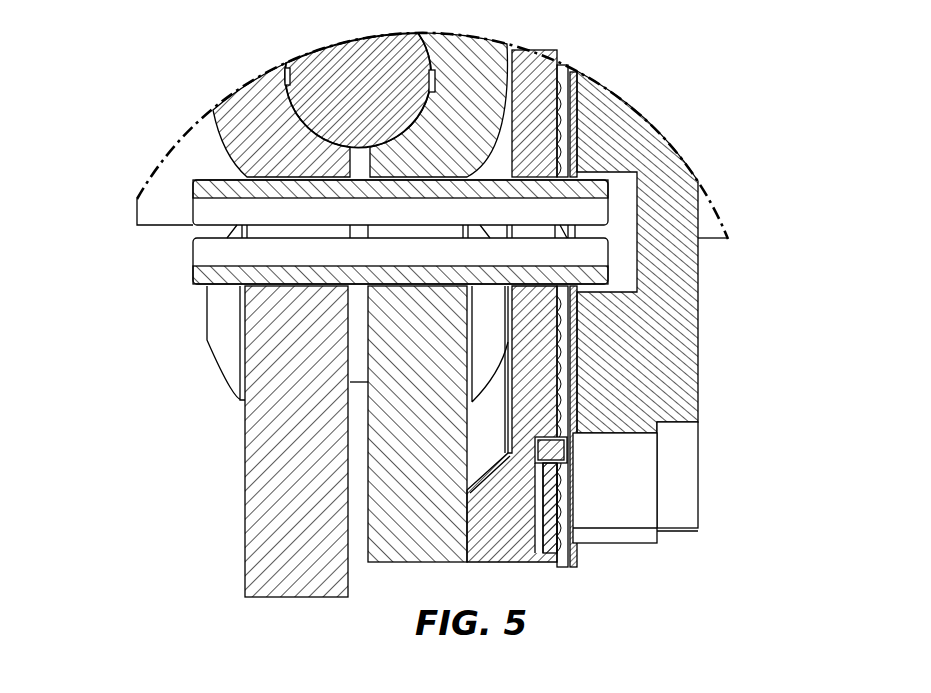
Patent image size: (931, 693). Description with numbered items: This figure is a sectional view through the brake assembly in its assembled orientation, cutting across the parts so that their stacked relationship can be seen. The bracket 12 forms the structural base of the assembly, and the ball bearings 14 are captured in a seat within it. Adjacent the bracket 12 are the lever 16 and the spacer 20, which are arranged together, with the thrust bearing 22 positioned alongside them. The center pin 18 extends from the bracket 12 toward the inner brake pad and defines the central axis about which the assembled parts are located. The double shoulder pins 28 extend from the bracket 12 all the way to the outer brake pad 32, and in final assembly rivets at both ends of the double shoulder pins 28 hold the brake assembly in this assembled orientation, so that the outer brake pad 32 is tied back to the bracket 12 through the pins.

The bracket 12 is at (268, 528).
The ball bearings 14 is at (342, 85).
The lever 16 is at (396, 543).
The center pin 18 is at (208, 253).
The spacer 20 is at (515, 553).
The thrust bearing 22 is at (572, 562).
The double shoulder pins 28 is at (685, 473).
The outer brake pad 32 is at (672, 328).